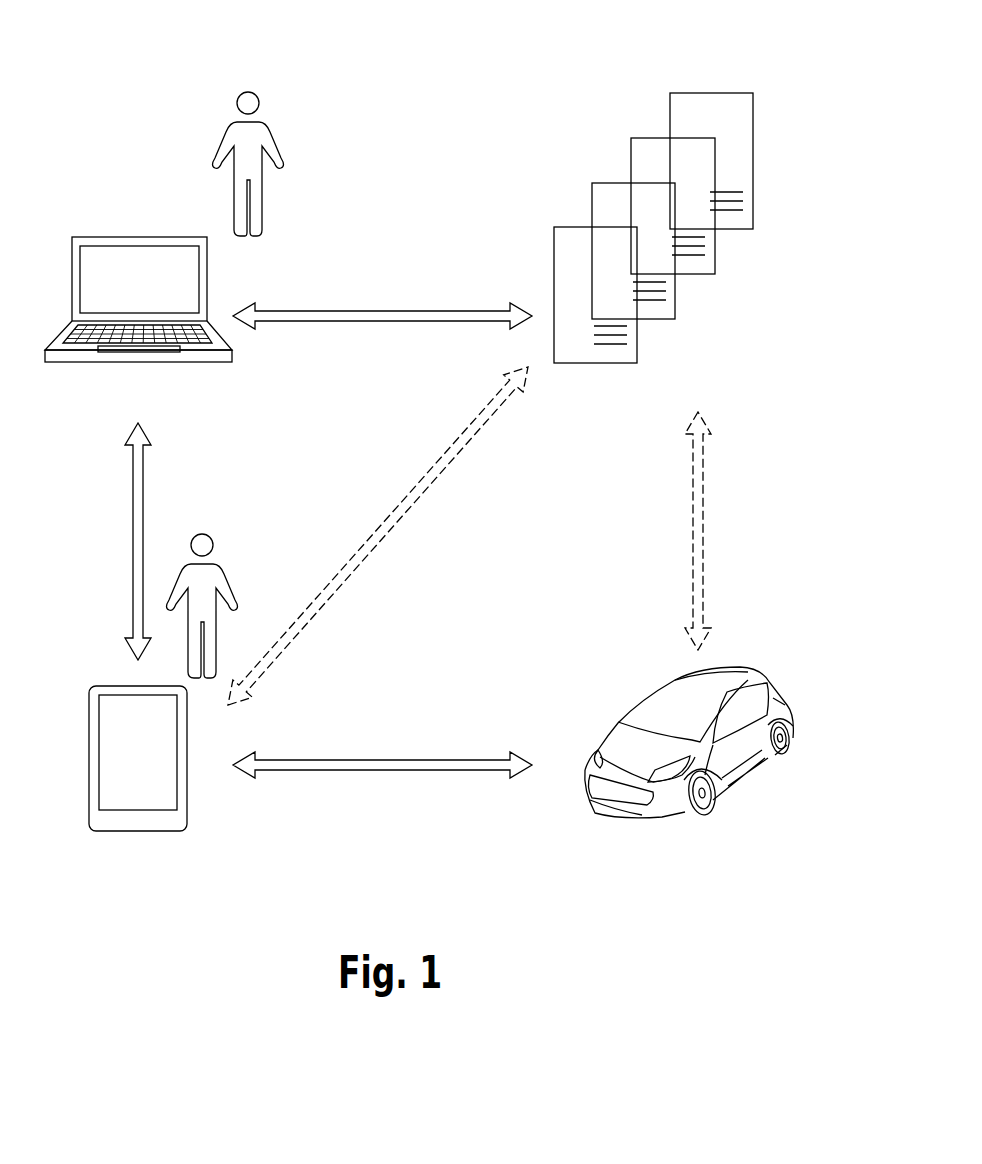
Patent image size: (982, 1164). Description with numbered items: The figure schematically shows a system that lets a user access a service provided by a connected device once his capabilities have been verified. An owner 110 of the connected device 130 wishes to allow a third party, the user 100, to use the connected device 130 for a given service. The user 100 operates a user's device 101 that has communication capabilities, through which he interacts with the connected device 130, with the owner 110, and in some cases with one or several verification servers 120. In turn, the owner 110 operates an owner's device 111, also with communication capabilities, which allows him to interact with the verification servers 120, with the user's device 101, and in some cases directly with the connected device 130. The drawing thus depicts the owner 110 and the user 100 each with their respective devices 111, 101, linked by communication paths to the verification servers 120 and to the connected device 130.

The user 100 is at (201, 548).
The user's device 101 is at (105, 687).
The owner 110 is at (247, 106).
The owner's device 111 is at (140, 237).
The verification servers 120 is at (818, 60).
The connected device 130 is at (653, 705).